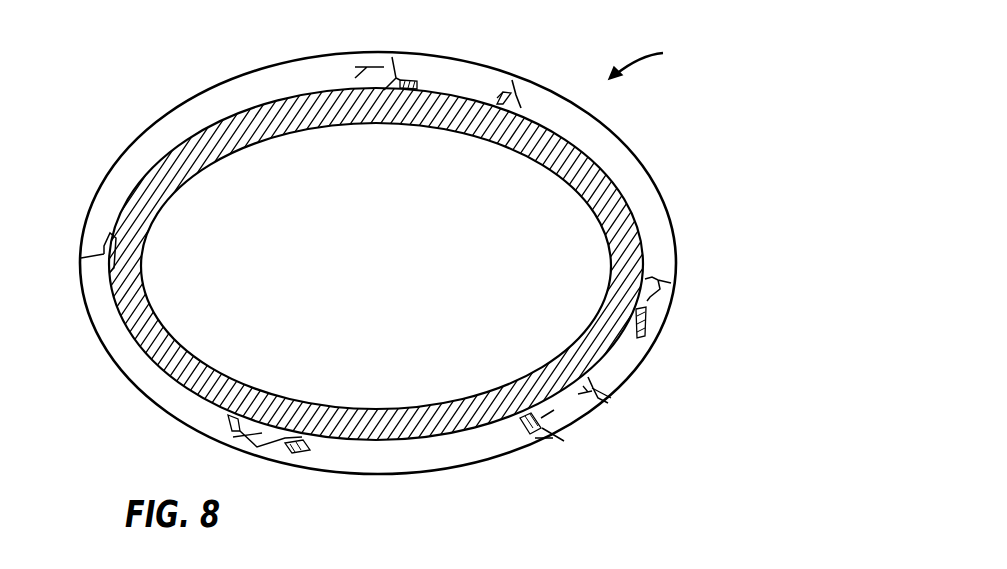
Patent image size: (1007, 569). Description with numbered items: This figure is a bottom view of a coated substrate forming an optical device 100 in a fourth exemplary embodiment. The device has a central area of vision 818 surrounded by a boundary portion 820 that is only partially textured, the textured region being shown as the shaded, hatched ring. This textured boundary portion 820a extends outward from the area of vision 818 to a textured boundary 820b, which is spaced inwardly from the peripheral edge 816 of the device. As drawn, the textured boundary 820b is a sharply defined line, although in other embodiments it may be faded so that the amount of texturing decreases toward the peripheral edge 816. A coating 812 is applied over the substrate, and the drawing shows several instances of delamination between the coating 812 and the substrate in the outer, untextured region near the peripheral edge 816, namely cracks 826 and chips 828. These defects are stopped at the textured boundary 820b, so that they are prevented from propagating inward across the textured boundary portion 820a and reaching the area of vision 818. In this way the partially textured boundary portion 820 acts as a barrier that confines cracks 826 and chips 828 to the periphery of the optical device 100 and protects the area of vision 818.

The assembly 100 is at (664, 60).
The coating 812 is at (290, 79).
The peripheral edge 816 is at (658, 187).
The area of vision 818 is at (255, 190).
The boundary portion 820 is at (493, 260).
The textured boundary portion 820a is at (640, 228).
The textured boundary 820b is at (612, 350).
The cracks 826 is at (497, 72).
The chips 828 is at (229, 419).